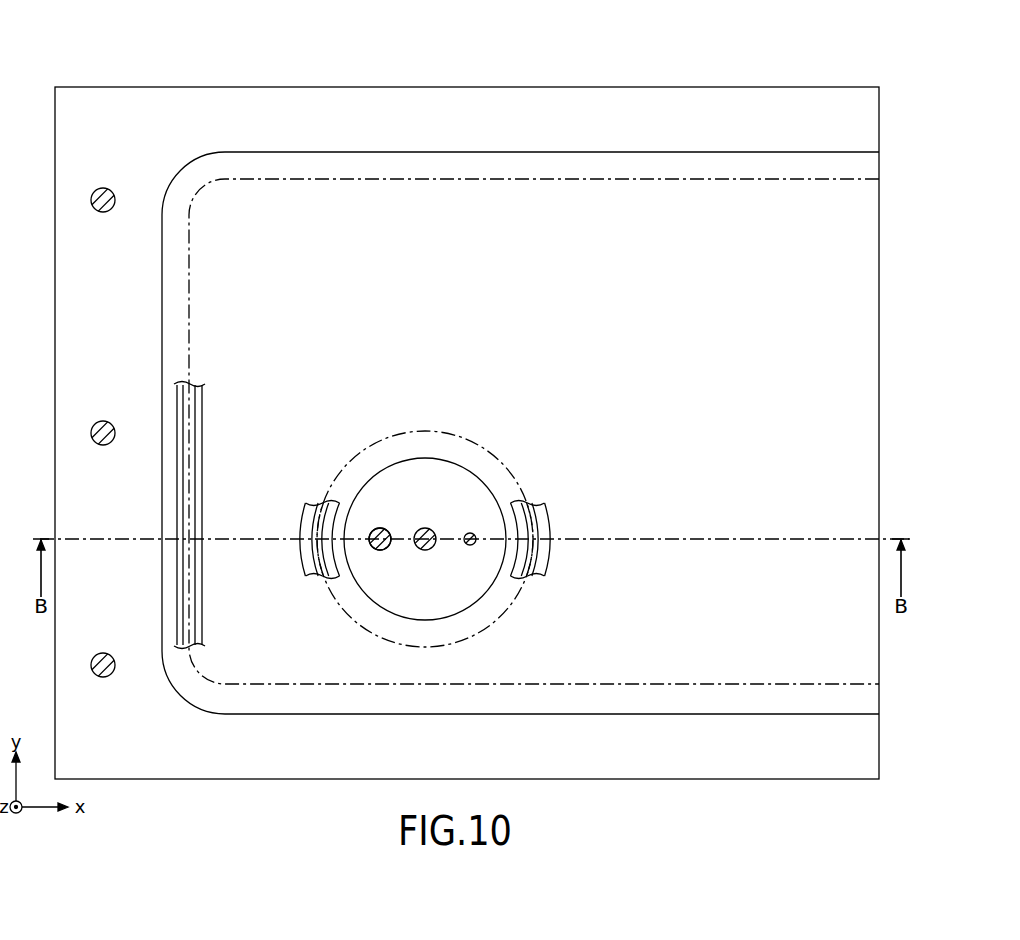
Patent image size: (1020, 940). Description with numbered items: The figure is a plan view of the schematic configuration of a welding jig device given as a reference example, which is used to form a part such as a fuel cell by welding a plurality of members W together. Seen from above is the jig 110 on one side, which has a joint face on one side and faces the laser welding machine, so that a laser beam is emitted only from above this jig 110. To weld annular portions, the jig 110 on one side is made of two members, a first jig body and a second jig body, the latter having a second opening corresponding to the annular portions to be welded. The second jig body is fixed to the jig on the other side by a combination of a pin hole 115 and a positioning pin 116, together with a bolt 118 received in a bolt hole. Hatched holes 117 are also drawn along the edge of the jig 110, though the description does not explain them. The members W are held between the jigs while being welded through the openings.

The jig on one side 110 is at (748, 112).
The pin hole 115 is at (371, 535).
The positioning pin 116 is at (371, 546).
The fixing screw hole 117 is at (110, 190).
The bolt 118 is at (430, 530).
The members W is at (163, 580).